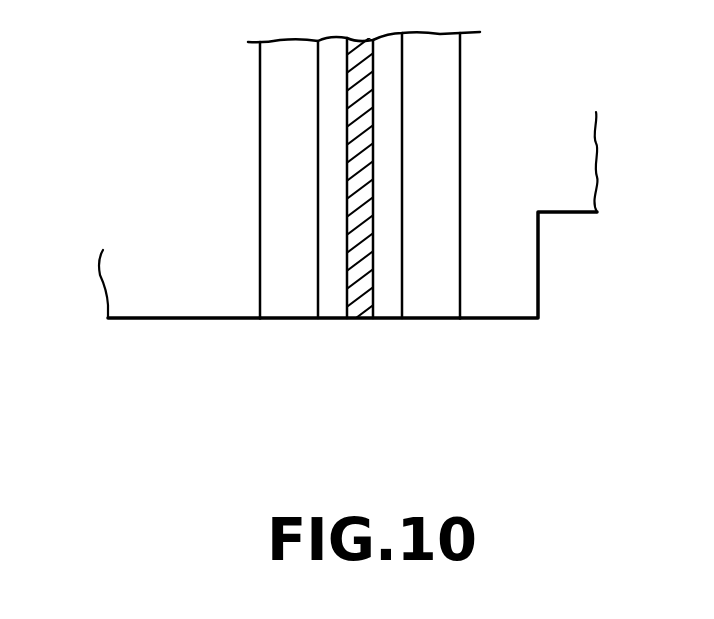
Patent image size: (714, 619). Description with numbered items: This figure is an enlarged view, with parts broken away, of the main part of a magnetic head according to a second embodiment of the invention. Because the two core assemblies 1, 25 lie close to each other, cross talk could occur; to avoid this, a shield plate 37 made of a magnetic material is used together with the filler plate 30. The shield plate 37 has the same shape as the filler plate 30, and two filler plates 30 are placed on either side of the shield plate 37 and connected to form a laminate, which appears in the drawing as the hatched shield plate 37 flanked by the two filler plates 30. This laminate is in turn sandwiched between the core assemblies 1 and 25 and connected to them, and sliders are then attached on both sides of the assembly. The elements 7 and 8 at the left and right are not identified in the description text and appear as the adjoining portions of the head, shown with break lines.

The core assembly 1 is at (292, 302).
The base surface (left) 7 is at (123, 287).
The stepped portion (right) 8 is at (528, 288).
The core assembly 25 is at (445, 303).
The filler plate 30 is at (332, 303).
The shield plate 37 is at (367, 308).